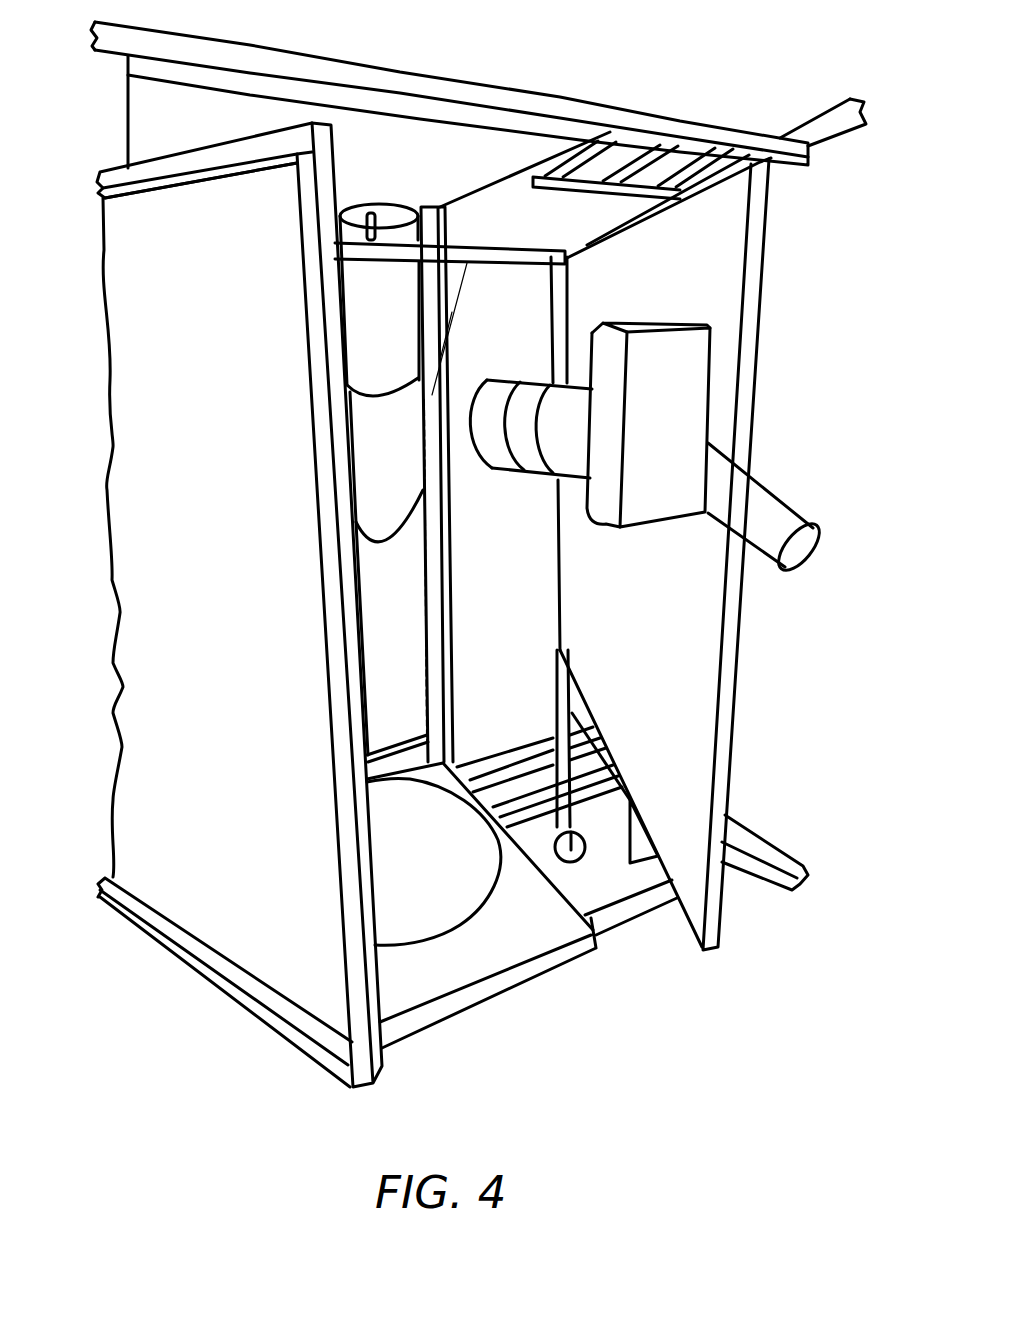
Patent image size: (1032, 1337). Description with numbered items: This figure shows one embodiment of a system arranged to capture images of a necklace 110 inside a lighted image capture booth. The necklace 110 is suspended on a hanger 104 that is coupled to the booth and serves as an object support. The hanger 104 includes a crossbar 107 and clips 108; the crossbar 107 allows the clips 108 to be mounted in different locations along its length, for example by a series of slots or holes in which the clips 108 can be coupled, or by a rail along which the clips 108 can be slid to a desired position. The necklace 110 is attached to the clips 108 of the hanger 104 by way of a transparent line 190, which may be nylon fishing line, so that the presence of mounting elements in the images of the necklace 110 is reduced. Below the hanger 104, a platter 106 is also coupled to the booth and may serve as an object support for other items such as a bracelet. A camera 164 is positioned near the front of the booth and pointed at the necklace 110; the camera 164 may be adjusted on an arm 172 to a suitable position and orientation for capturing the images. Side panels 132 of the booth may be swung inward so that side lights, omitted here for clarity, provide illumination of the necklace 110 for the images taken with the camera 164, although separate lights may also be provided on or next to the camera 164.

The hanger 104 is at (372, 248).
The platter 106 is at (445, 890).
The crossbar 107 is at (557, 260).
The clips 108 is at (467, 265).
The necklace 110 is at (388, 543).
The side panels 132 is at (255, 771).
The camera 164 is at (690, 433).
The arm 172 is at (785, 512).
The transparent line 190 is at (452, 312).